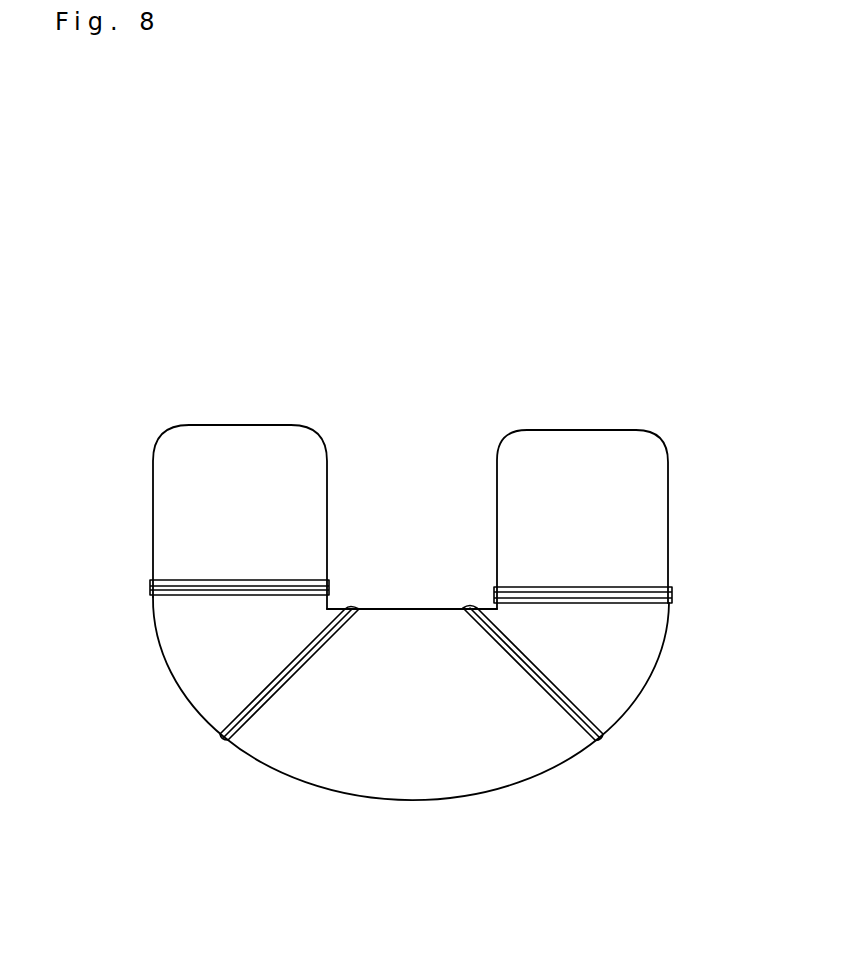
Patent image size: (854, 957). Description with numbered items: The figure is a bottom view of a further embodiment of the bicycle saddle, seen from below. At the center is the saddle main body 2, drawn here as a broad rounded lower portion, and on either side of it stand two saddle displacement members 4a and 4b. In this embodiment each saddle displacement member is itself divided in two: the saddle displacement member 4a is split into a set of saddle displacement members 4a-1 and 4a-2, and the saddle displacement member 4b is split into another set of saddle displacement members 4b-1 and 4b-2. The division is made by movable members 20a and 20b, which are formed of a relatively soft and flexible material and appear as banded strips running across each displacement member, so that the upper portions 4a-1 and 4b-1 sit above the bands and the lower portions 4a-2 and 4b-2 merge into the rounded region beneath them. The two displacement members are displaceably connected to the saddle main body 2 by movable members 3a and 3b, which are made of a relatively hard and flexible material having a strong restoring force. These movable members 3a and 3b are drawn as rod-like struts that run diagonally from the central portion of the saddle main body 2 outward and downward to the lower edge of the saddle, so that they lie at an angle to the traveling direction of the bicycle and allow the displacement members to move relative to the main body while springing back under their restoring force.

The saddle main body 2 is at (405, 760).
The movable member 3a is at (222, 745).
The movable member 3b is at (598, 748).
The saddle displacement member 4a is at (197, 562).
The saddle displacement member 4a-1 is at (173, 503).
The saddle displacement member 4a-2 is at (185, 662).
The saddle displacement member 4b is at (623, 566).
The saddle displacement member 4b-1 is at (645, 520).
The saddle displacement member 4b-2 is at (630, 688).
The movable member 20a is at (149, 596).
The movable member 20b is at (673, 600).